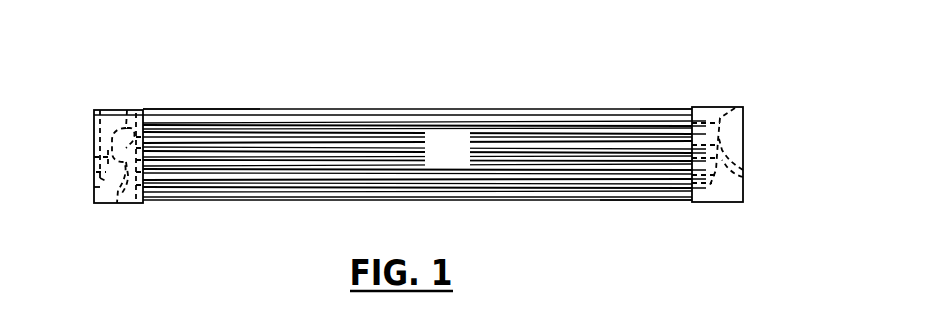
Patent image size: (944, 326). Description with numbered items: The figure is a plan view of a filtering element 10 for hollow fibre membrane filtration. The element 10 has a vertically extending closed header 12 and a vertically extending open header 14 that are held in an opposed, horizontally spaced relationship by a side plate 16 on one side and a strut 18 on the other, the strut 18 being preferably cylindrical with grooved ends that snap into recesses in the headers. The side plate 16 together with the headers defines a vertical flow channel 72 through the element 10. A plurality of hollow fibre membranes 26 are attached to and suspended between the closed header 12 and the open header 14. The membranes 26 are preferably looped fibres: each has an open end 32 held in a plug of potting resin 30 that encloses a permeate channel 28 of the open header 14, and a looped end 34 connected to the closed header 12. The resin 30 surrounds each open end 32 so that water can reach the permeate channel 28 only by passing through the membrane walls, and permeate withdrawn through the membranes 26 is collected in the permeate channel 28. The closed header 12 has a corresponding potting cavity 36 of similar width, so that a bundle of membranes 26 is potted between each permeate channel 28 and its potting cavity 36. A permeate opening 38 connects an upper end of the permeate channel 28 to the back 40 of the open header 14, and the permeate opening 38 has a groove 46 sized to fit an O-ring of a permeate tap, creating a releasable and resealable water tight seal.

The filtering element 10 is at (760, 149).
The closed header 12 is at (745, 127).
The open header 14 is at (95, 197).
The side plate 16 is at (393, 108).
The strut 18 is at (643, 192).
The hollow fibre membranes 26 is at (570, 147).
The permeate channel 28 is at (127, 110).
The potting resin 30 is at (150, 110).
The open end 32 is at (180, 114).
The looped end 34 is at (688, 98).
The potting cavity 36 is at (743, 170).
The permeate opening 38 is at (94, 157).
The back 40 is at (93, 187).
The groove 46 is at (100, 110).
The vertical flow channel 72 is at (465, 163).